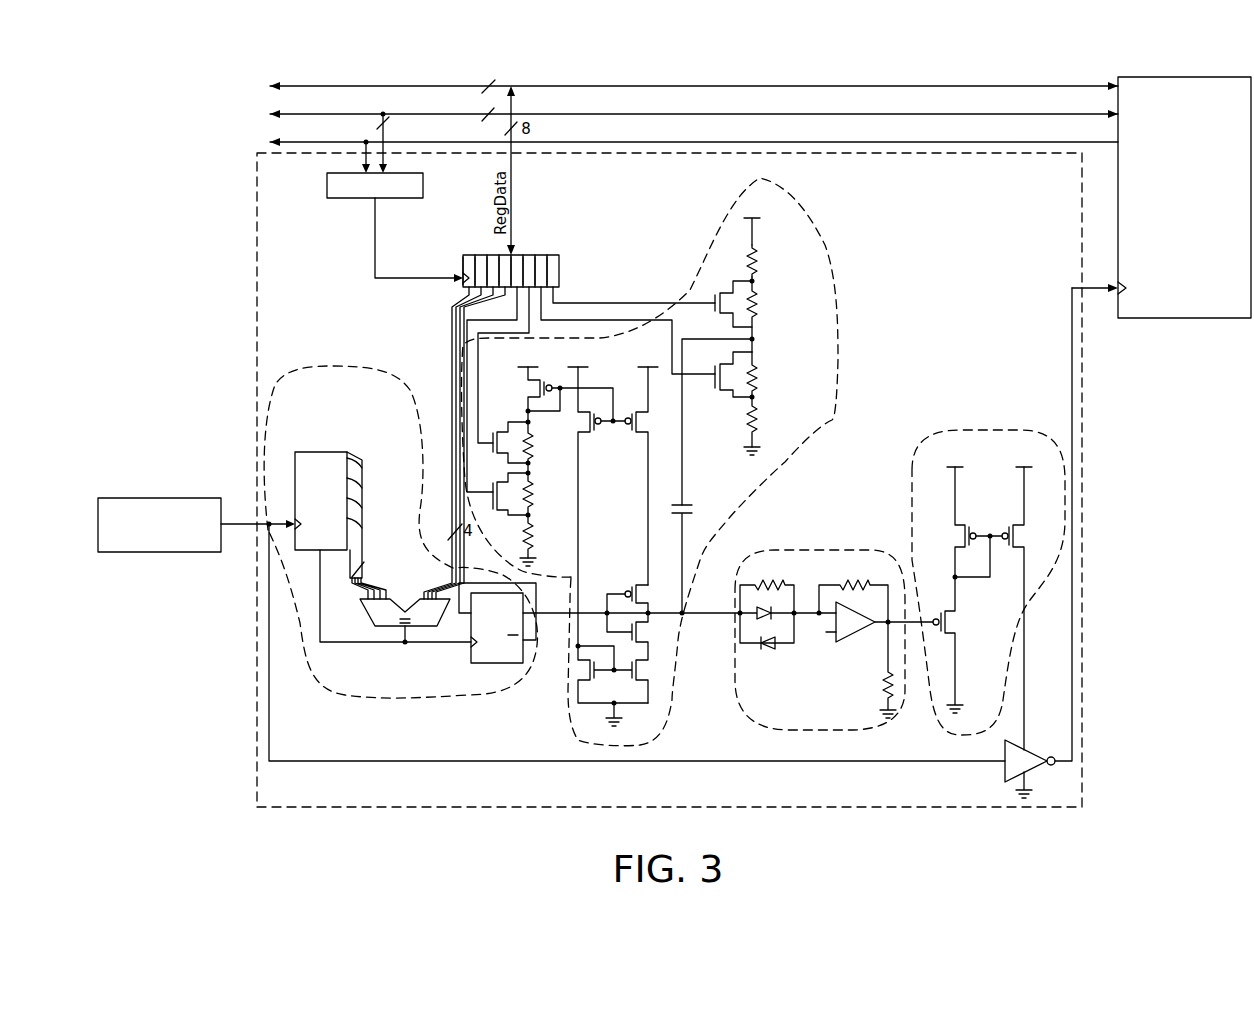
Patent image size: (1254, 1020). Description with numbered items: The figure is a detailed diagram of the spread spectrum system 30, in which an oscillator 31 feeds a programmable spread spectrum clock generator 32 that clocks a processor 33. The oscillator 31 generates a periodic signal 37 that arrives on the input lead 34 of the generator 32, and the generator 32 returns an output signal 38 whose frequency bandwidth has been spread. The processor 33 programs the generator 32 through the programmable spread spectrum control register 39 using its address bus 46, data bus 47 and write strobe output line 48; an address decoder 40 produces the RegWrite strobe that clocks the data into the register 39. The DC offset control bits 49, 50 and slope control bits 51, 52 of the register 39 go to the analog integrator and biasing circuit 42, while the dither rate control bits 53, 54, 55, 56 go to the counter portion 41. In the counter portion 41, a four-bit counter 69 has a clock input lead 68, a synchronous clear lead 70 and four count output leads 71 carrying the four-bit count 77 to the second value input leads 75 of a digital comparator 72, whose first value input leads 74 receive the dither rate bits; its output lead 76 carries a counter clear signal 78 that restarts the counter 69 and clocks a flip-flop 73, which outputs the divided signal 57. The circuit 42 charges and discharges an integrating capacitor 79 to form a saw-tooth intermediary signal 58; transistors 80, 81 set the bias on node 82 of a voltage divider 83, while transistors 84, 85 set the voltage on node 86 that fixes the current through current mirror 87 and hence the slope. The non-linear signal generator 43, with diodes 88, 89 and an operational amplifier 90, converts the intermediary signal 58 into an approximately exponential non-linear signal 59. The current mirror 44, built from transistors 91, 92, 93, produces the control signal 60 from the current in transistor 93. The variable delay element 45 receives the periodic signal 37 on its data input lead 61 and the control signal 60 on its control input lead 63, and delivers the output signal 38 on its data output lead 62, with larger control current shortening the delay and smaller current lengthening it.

The spread spectrum system 30 is at (812, 62).
The oscillator 31 is at (159, 525).
The programmable spread spectrum clock generator 32 is at (1082, 738).
The processor 33 is at (1184, 197).
The input lead 34 is at (263, 530).
The periodic signal 37 is at (251, 517).
The output signal 38 is at (1110, 297).
The programmable spread spectrum control register 39 is at (559, 268).
The address decoder 40 is at (327, 186).
The counter portion 41 is at (318, 367).
The analog integrator and biasing circuit 42 is at (835, 272).
The non-linear signal generator 43 is at (832, 550).
The current mirror 44 is at (960, 430).
The variable delay element 45 is at (1027, 543).
The address bus 46 is at (958, 114).
The data bus 47 is at (975, 86).
The write strobe output line 48 is at (938, 142).
The DC offset control bit 49 is at (553, 255).
The DC offset control bit 50 is at (541, 255).
The slope control bit 51 is at (529, 255).
The slope control bit 52 is at (517, 255).
The dither rate control bit 53 is at (505, 255).
The dither rate control bit 54 is at (493, 255).
The dither rate control bit 55 is at (481, 255).
The dither rate control bit 56 is at (469, 255).
The divided signal 57 is at (568, 622).
The intermediary signal 58 is at (700, 622).
The non-linear signal 59 is at (930, 613).
The control signal 60 is at (1025, 680).
The data input lead 61 is at (1005, 765).
The data output lead 62 is at (1051, 766).
The control input lead 63 is at (1022, 749).
The clock input lead 68 is at (288, 522).
The four-bit counter 69 is at (327, 452).
The synchronous clear lead 70 is at (320, 560).
The count output leads 71 is at (338, 458).
The digital comparator 72 is at (375, 624).
The flip-flop 73 is at (476, 663).
The first value input leads 74 is at (427, 607).
The second value input leads 75 is at (380, 607).
The output lead 76 is at (408, 632).
The four-bit count 77 is at (367, 522).
The counter clear signal 78 is at (444, 648).
The integrating capacitor 79 is at (692, 509).
The transistor 80 is at (718, 293).
The transistor 81 is at (716, 388).
The node 82 is at (755, 339).
The voltage divider 83 is at (783, 363).
The transistor 84 is at (495, 432).
The transistor 85 is at (497, 510).
The node 86 is at (613, 424).
The current mirror 87 is at (613, 468).
The diode 88 is at (785, 590).
The diode 89 is at (770, 648).
The operational amplifier 90 is at (848, 640).
The transistor 91 is at (957, 622).
The transistor 92 is at (952, 541).
The transistor 93 is at (1028, 541).